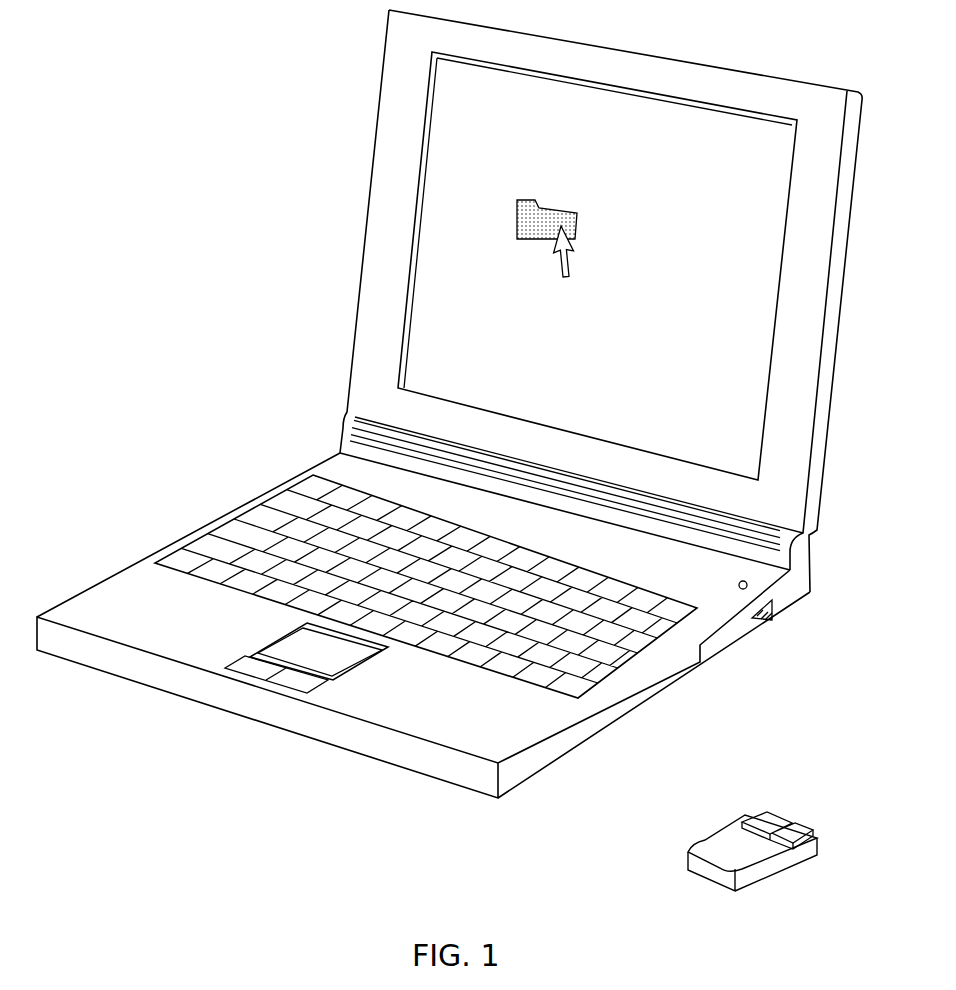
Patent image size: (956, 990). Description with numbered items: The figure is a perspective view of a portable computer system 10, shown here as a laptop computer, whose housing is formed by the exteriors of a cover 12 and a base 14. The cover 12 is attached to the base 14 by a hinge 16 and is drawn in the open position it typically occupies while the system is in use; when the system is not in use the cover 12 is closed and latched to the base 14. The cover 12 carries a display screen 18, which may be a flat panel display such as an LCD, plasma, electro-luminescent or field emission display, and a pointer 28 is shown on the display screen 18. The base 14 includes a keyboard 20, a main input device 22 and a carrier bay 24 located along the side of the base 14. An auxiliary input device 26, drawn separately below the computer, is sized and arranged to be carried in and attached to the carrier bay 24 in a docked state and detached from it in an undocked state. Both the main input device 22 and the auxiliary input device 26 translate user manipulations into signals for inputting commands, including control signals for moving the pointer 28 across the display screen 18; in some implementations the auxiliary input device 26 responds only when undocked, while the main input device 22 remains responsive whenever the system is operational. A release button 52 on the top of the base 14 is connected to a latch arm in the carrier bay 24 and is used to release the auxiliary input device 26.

The portable computer system 10 is at (115, 85).
The cover 12 is at (371, 176).
The base 14 is at (240, 507).
The hinge 16 is at (816, 532).
The display screen 18 is at (623, 165).
The keyboard 20 is at (196, 596).
The main input device 22 is at (386, 681).
The carrier bay 24 is at (756, 646).
The auxiliary input device 26 is at (712, 814).
The pointer 28 is at (577, 266).
The release button 52 is at (740, 582).